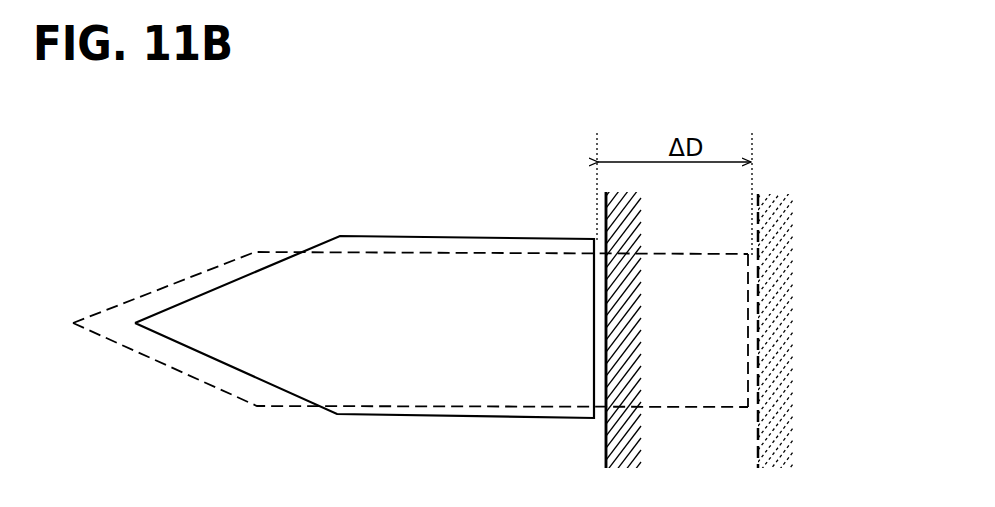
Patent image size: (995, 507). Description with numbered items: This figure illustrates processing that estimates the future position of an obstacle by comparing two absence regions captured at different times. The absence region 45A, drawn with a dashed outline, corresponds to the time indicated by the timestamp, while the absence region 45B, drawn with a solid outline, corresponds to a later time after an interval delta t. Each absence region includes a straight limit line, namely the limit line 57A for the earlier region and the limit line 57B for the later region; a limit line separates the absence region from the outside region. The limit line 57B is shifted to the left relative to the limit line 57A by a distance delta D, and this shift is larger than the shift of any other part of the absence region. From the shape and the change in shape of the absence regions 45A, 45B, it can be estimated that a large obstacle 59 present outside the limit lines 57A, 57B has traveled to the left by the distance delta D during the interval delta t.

The absence region 45A is at (190, 273).
The absence region 45B is at (237, 277).
The limit line 57A is at (747, 315).
The limit line 57B is at (594, 320).
The obstacle 59 is at (604, 442).